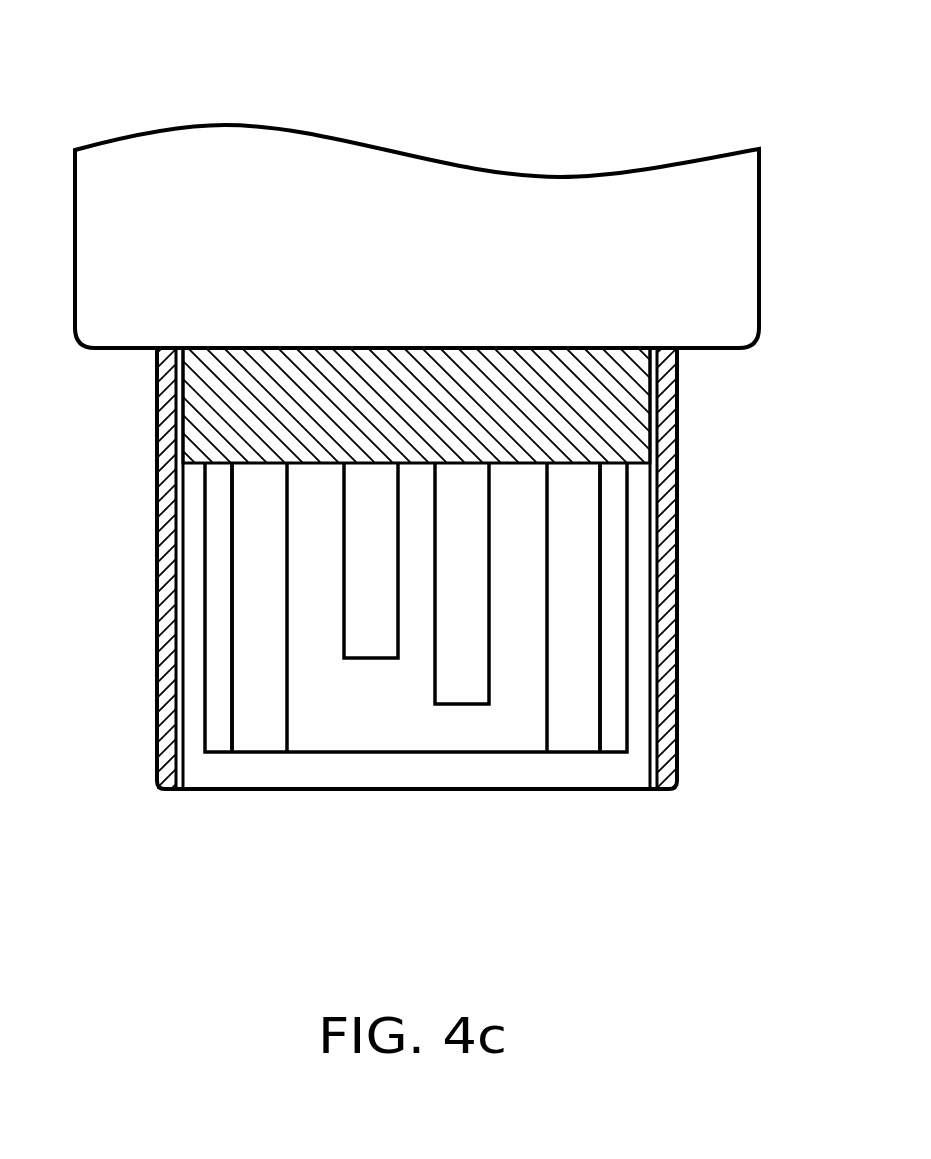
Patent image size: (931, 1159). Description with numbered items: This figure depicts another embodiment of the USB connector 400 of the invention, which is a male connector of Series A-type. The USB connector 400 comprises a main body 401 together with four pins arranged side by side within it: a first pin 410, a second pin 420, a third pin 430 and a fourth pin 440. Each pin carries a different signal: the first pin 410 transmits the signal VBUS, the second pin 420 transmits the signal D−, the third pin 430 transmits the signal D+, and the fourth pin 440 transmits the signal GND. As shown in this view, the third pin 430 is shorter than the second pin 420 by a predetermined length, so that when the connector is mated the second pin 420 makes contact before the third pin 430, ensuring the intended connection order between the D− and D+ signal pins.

The USB connector 400 is at (818, 41).
The main body 401 is at (640, 403).
The first pin 410 is at (577, 738).
The second pin 420 is at (466, 688).
The third pin 430 is at (372, 647).
The fourth pin 440 is at (263, 738).